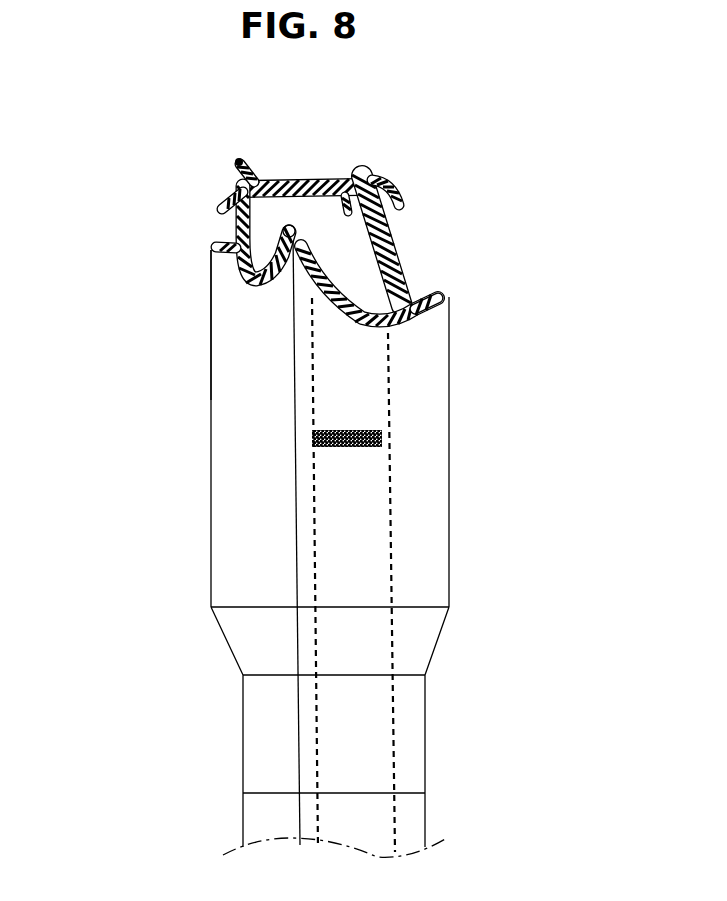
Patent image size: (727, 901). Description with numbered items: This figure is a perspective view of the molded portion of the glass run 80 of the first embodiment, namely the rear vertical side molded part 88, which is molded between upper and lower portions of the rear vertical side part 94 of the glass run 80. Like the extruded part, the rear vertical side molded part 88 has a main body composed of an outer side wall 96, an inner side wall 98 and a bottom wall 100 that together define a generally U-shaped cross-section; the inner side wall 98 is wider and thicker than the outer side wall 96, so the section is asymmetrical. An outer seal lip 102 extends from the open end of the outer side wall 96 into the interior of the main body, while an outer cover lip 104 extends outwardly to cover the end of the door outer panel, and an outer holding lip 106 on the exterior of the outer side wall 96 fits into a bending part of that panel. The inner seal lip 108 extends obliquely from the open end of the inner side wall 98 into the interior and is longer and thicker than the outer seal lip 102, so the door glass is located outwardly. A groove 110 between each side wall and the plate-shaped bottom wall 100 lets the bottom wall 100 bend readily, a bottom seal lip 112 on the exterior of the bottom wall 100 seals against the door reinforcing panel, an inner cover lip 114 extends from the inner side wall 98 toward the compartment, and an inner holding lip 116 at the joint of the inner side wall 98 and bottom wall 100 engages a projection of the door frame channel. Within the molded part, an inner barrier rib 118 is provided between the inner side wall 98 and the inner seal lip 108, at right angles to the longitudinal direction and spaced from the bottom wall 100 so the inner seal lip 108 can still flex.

The glass run 80 is at (195, 530).
The rear vertical side molded part 88 is at (418, 519).
The rear vertical side part 94 is at (413, 827).
The outer side wall 96 is at (212, 247).
The inner side wall 98 is at (378, 246).
The bottom wall 100 is at (297, 178).
The outer seal lip 102 is at (282, 240).
The outer cover lip 104 is at (207, 251).
The outer holding lip 106 is at (232, 218).
The inner seal lip 108 is at (323, 276).
The groove 110 is at (349, 206).
The bottom seal lip 112 is at (236, 161).
The inner cover lip 114 is at (446, 301).
The inner holding lip 116 is at (401, 196).
The inner barrier rib 118 is at (350, 425).